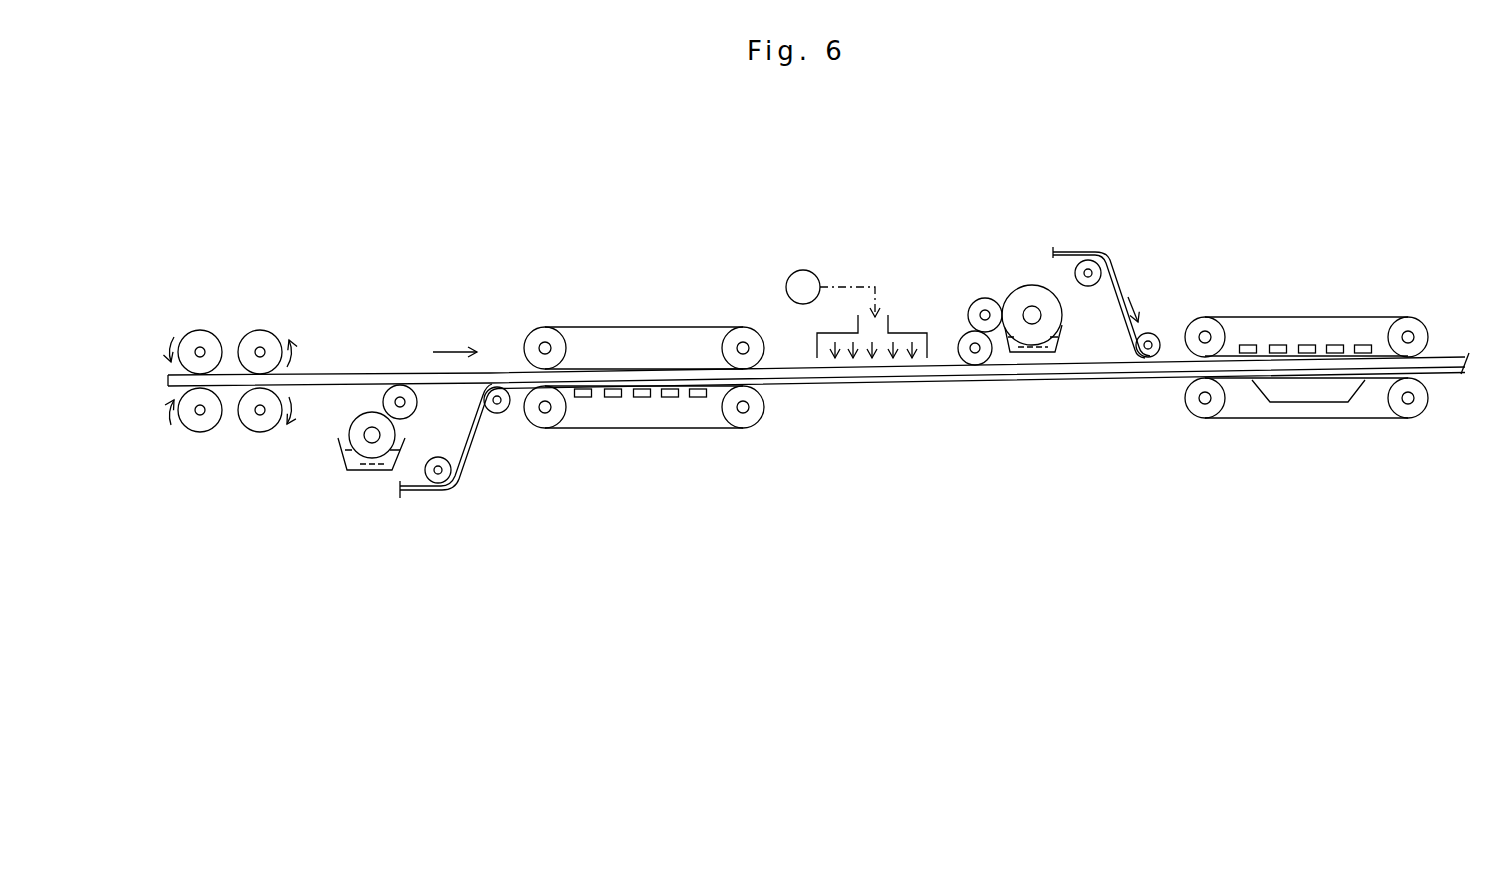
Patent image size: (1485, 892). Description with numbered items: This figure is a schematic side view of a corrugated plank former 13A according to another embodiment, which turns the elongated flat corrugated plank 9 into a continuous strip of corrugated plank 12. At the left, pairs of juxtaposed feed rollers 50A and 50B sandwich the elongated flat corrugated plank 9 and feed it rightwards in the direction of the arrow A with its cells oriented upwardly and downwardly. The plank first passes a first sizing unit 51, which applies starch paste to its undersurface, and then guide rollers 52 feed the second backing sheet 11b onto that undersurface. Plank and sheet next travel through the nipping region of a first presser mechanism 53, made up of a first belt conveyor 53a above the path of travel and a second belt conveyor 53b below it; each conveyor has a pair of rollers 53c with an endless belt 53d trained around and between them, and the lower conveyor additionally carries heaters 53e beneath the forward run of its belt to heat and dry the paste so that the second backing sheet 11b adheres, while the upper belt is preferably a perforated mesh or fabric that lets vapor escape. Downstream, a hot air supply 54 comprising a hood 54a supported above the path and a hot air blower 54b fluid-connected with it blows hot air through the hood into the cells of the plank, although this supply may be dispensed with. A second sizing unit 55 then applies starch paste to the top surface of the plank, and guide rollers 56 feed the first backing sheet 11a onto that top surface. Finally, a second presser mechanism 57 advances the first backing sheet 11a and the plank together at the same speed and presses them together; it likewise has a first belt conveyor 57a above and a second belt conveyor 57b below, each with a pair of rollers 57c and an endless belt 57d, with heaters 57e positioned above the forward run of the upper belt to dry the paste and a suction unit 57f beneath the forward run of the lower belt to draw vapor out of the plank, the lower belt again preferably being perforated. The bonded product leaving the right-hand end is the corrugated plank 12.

The elongated flat corrugated plank 9 is at (337, 374).
The arrow A is at (448, 351).
The first backing sheet 11a is at (1117, 280).
The second backing sheet 11b is at (460, 470).
The corrugated plank 12 is at (1443, 343).
The corrugated plank former 13A is at (702, 232).
The feed roller 50A is at (200, 330).
The feed roller 50B is at (260, 330).
The first sizing unit 51 is at (338, 476).
The guide rollers 52 is at (434, 485).
The first presser mechanism 53 is at (655, 379).
The first belt conveyor 53a is at (590, 323).
The second belt conveyor 53b is at (644, 459).
The rollers 53c is at (532, 338).
The endless belt 53d is at (673, 326).
The heaters 53e is at (613, 399).
The hot air supply 54 is at (861, 275).
The hood 54a is at (908, 331).
The hot air blower 54b is at (803, 270).
The second sizing unit 55 is at (978, 293).
The guide rollers 56 is at (1097, 256).
The second presser mechanism 57 is at (1301, 360).
The first belt conveyor 57a is at (1370, 312).
The second belt conveyor 57b is at (1306, 381).
The rollers 57c is at (1203, 320).
The endless belt 57d is at (1257, 315).
The heaters 57e is at (1335, 345).
The suction unit 57f is at (1335, 407).